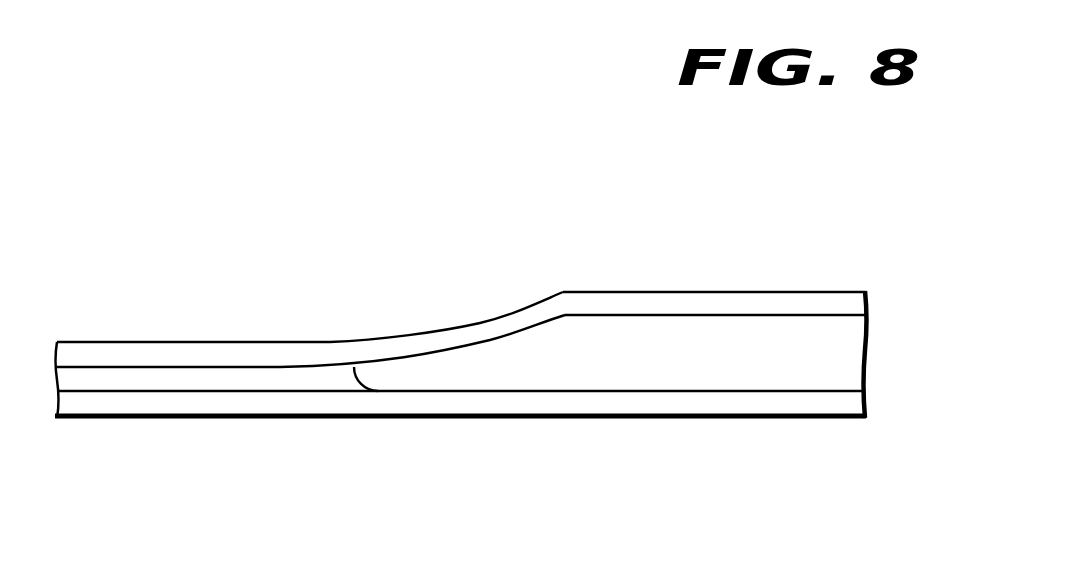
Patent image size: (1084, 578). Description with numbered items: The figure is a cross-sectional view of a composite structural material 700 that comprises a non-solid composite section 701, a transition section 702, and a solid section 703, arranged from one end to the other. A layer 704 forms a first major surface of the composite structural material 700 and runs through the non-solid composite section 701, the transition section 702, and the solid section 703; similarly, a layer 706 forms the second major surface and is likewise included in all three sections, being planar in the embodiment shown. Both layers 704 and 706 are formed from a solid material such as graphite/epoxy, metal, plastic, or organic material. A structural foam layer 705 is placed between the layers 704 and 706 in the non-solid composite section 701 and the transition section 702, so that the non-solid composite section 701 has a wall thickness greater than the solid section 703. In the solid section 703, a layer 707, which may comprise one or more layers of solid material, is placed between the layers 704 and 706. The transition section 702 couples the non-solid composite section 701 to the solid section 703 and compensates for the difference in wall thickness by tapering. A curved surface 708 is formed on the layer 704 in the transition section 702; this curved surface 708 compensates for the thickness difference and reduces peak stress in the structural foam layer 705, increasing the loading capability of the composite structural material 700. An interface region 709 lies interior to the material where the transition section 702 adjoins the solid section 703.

The composite structural material 700 is at (571, 108).
The non-solid composite section 701 is at (676, 250).
The transition section 702 is at (410, 253).
The solid section 703 is at (204, 308).
The layer 704 is at (768, 298).
The structural foam layer 705 is at (838, 350).
The layer 706 is at (738, 402).
The layer 707 is at (170, 382).
The curved surface 708 is at (492, 320).
The interface region 709 is at (354, 369).